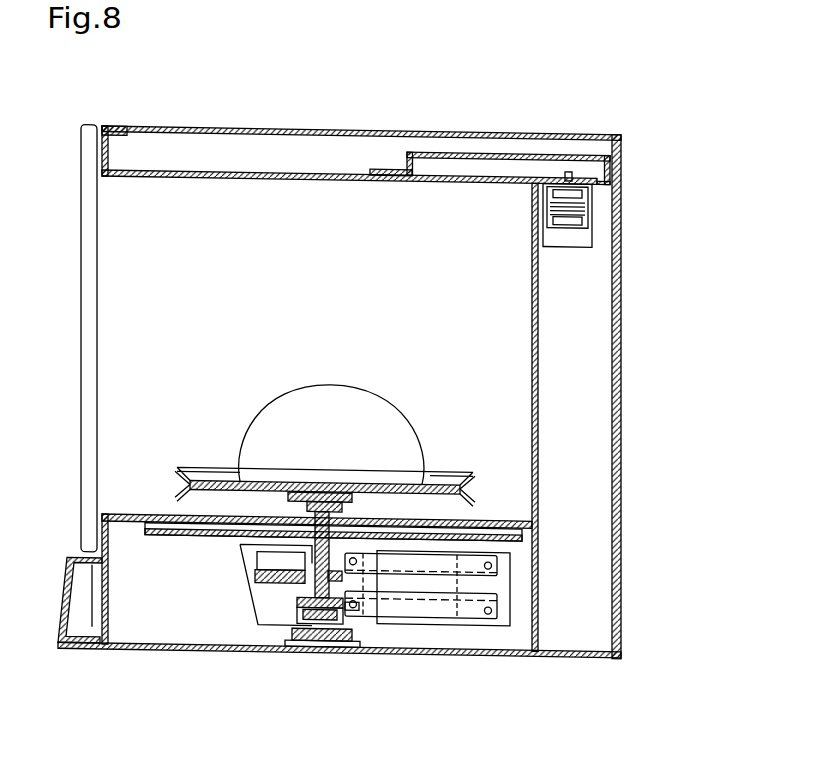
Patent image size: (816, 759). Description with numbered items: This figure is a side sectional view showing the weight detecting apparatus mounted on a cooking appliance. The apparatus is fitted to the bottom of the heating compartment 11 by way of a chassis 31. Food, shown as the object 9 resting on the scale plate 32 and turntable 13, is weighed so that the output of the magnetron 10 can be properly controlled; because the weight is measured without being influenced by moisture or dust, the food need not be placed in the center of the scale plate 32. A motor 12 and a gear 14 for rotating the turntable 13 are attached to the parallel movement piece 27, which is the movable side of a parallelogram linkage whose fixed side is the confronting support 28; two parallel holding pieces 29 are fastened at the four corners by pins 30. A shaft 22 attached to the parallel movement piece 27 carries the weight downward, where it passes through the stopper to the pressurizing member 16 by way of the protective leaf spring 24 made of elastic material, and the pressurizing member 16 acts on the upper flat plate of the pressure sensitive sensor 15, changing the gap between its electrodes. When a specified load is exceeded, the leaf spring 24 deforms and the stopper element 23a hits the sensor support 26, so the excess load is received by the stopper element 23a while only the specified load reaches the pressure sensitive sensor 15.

The load object 9 is at (405, 428).
The magnetron 10 is at (585, 214).
The heating compartment 11 is at (540, 326).
The motor 12 is at (258, 554).
The turntable 13 is at (180, 496).
The gear 14 is at (305, 570).
The pressure sensitive sensor 15 is at (310, 636).
The pressurizing member 16 is at (335, 649).
The shaft 22 is at (283, 482).
The stopper element 23a is at (297, 602).
The protective leaf spring 24 is at (292, 632).
The sensor support 26 is at (322, 636).
The parallel movement piece 27 is at (362, 608).
The support 28 is at (502, 583).
The holding pieces 29 is at (432, 602).
The pins 30 is at (353, 604).
The chassis 31 is at (524, 541).
The scale plate 32 is at (177, 469).